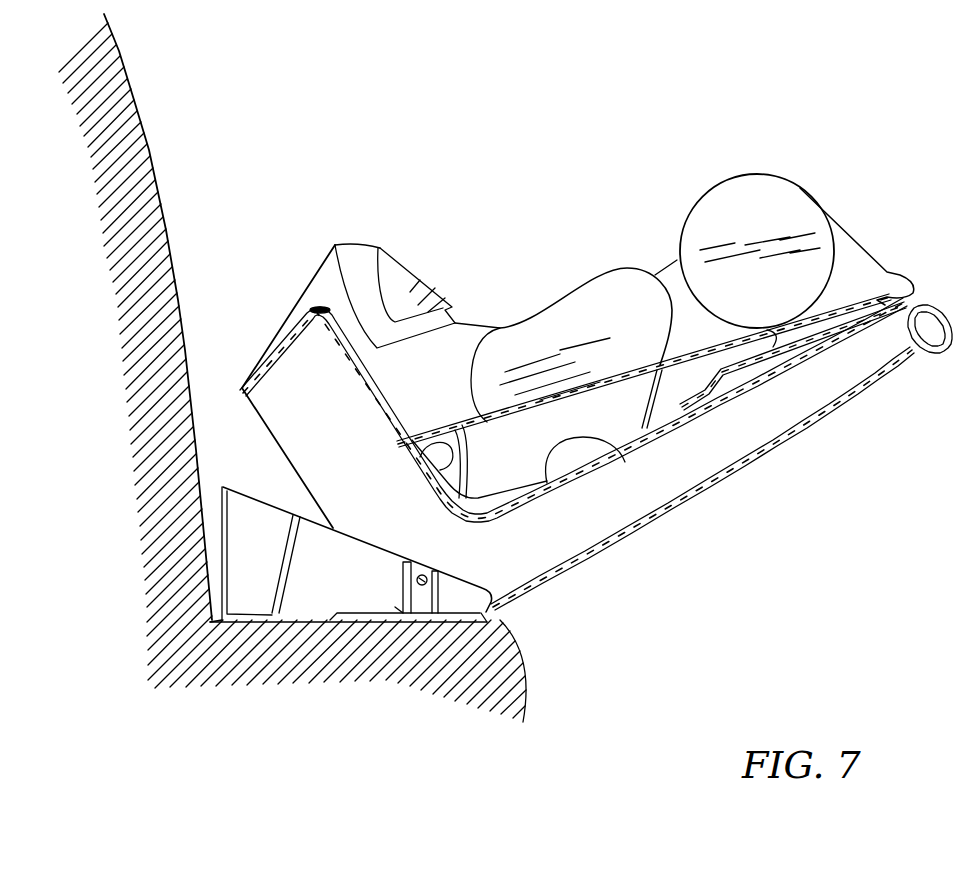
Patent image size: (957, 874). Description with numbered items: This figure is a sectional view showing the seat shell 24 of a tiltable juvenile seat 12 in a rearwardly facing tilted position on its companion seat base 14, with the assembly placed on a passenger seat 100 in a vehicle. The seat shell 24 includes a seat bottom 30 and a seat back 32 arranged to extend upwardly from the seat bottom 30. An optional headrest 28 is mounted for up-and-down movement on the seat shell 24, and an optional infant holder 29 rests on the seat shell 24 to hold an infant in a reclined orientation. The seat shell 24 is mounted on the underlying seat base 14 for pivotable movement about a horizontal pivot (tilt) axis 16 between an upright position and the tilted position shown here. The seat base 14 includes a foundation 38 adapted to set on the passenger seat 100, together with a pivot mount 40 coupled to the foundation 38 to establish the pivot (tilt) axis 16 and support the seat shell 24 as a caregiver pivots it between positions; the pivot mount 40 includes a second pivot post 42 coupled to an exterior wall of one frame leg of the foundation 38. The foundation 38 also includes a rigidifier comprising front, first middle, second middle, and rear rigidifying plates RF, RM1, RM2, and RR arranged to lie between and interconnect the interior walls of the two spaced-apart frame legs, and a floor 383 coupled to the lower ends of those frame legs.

The tiltable juvenile seat 12 is at (723, 493).
The seat base 14 is at (359, 580).
The pivot (tilt) axis 16 is at (413, 615).
The seat shell 24 is at (858, 395).
The headrest 28 is at (864, 239).
The infant holder 29 is at (572, 345).
The seat bottom 30 is at (390, 390).
The seat back 32 is at (597, 473).
The foundation 38 is at (212, 592).
The pivot mount 40 is at (411, 550).
The second pivot post 42 is at (423, 560).
The passenger seat 100 is at (495, 614).
The floor 383 is at (230, 617).
The front rigidifying plate RF is at (227, 537).
The first middle rigidifying plate RM1 is at (290, 575).
The second middle rigidifying plate RM2 is at (402, 580).
The rear rigidifying plate RR is at (437, 587).